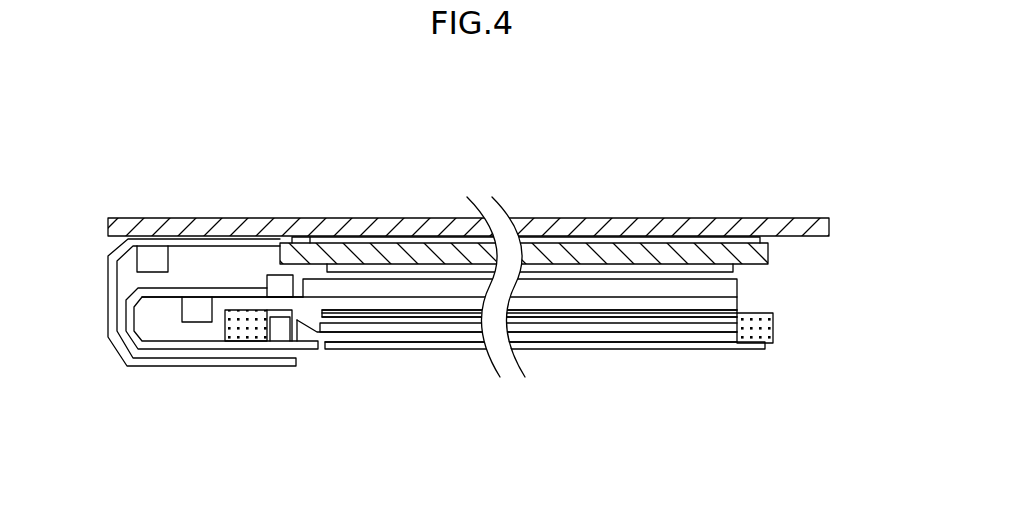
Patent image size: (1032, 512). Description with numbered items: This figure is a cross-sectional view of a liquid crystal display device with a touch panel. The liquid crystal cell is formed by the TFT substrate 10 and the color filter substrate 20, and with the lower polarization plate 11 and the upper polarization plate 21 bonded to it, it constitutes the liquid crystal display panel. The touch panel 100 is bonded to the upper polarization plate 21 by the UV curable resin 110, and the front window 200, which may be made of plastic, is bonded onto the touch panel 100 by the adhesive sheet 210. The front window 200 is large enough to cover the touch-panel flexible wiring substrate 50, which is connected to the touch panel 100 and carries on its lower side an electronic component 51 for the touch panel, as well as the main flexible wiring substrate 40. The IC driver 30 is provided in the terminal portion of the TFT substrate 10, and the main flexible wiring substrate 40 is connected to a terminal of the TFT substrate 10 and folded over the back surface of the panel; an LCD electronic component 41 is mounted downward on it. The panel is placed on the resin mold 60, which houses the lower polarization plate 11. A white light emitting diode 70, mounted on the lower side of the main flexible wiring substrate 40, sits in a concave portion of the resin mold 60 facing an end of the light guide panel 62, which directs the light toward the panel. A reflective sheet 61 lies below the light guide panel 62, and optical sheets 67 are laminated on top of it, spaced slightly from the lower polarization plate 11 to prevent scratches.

The front window 200 is at (655, 222).
The adhesive sheet 210 is at (740, 240).
The touch panel 100 is at (758, 252).
The UV curable resin 110 is at (727, 272).
The upper polarization plate 21 is at (727, 290).
The color filter substrate 20 is at (727, 305).
The TFT substrate 10 is at (728, 312).
The lower polarization plate 11 is at (582, 315).
The light guide panel 62 is at (387, 338).
The optical sheets 67 is at (688, 332).
The reflective sheet 61 is at (748, 348).
The resin mold 60 is at (248, 332).
The light emitting diode 70 is at (283, 332).
The IC driver 30 is at (277, 282).
The LCD electronic component 41 is at (198, 303).
The main flexible wiring substrate 40 is at (178, 343).
The electronic component for the touch panel 51 is at (143, 267).
The touch-panel flexible wiring substrate 50 is at (120, 250).